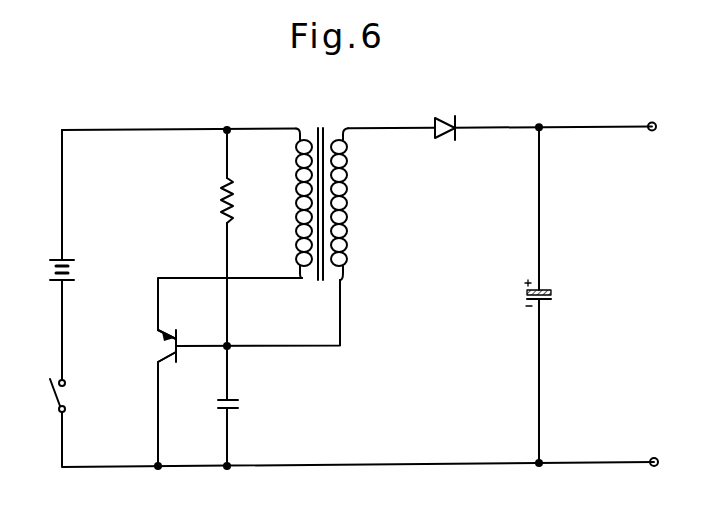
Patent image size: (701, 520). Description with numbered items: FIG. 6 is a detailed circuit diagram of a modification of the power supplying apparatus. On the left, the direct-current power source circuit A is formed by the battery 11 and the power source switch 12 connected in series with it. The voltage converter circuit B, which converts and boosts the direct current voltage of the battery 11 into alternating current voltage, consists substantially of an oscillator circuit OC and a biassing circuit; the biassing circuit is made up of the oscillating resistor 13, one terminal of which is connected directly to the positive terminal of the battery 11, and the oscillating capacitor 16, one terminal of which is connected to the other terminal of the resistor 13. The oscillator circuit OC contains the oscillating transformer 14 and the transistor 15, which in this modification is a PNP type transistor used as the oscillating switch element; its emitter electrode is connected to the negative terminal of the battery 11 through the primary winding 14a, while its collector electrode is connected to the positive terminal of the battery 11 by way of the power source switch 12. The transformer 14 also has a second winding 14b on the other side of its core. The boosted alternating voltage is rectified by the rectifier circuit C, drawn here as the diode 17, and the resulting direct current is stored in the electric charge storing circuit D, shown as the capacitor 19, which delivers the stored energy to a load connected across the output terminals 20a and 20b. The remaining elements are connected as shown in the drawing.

The battery 11 is at (66, 262).
The power source switch 12 is at (66, 402).
The oscillating resistor 13 is at (222, 216).
The oscillating transformer 14 is at (319, 179).
The primary winding 14a is at (297, 214).
The secondary winding 14b is at (347, 228).
The transistor 15 is at (168, 339).
The oscillating capacitor 16 is at (237, 407).
The diode 17 is at (440, 117).
The electrolytic capacitor 19 is at (548, 296).
The output terminal 20a is at (652, 122).
The output terminal 20b is at (654, 467).
The direct-current power source circuit A is at (58, 285).
The voltage converter circuit B is at (270, 124).
The rectifier circuit C is at (459, 119).
The electric charge storing circuit D is at (527, 424).
The oscillator circuit OC is at (256, 154).